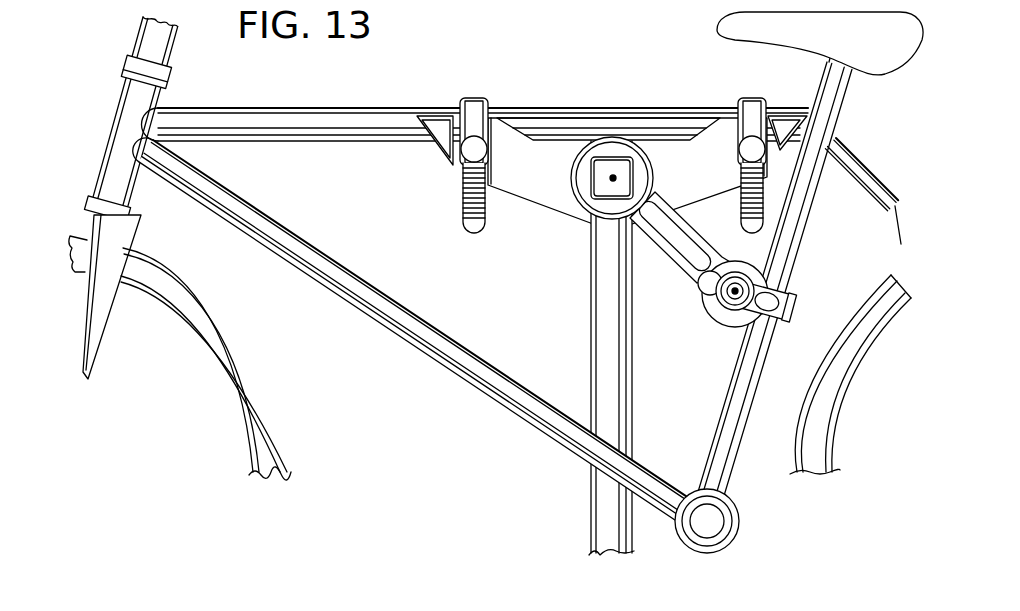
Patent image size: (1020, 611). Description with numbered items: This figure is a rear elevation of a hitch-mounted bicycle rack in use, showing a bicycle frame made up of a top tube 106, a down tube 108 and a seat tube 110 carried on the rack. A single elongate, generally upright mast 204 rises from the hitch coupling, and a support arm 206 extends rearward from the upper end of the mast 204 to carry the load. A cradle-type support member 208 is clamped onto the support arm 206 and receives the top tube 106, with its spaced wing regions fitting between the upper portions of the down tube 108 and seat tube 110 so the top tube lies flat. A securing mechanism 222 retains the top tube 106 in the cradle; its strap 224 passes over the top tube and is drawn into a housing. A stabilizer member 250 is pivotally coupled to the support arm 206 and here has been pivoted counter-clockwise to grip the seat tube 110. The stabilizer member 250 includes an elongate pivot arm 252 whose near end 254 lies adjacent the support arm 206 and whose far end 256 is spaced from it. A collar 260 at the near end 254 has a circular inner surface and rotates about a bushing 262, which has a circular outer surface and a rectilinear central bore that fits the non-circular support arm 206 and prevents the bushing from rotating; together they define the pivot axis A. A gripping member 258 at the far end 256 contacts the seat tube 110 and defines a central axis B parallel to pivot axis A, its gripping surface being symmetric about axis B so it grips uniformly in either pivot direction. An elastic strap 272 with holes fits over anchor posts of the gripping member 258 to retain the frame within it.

The top tube 106 is at (318, 118).
The down tube 108 is at (373, 310).
The seat tube 110 is at (798, 245).
The mast 204 is at (598, 332).
The support arm 206 is at (596, 170).
The support member 208 is at (545, 157).
The securing mechanism 222 is at (464, 92).
The strap 224 is at (470, 197).
The stabilizer member 250 is at (670, 266).
The pivot arm 252 is at (660, 256).
The near end 254 is at (657, 193).
The far end 256 is at (690, 276).
The gripping member 258 is at (715, 324).
The collar 260 is at (574, 160).
The bushing 262 is at (613, 153).
The strap 272 is at (792, 308).
The pivot axis A is at (616, 175).
The central axis B is at (733, 288).